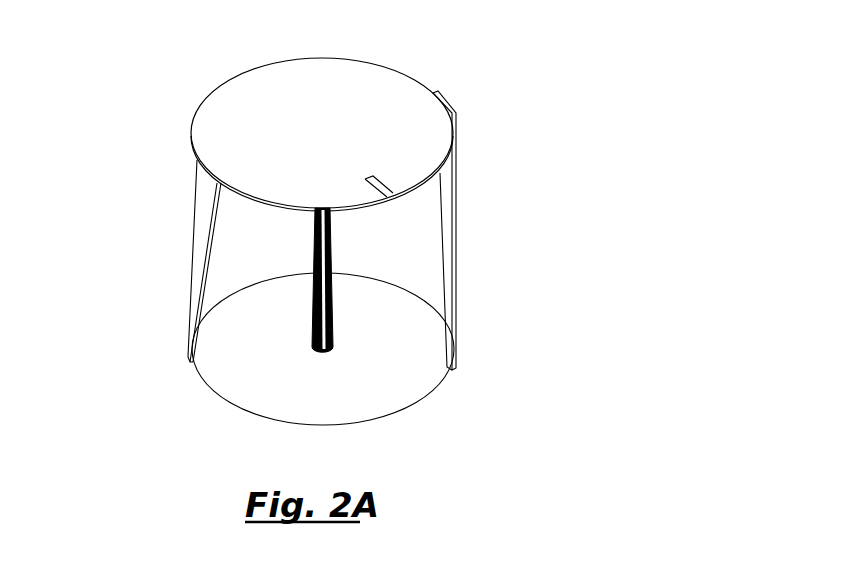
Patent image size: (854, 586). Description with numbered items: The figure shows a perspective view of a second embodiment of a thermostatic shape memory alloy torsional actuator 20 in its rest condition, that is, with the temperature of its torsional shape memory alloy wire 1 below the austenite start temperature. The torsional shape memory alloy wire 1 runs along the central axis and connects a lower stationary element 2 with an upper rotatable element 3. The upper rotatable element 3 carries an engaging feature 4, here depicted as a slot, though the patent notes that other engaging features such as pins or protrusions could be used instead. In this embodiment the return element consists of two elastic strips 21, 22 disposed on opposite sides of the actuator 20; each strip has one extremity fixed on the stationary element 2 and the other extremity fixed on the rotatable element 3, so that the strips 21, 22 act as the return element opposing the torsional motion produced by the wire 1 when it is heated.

The torsional shape memory alloy wire 1 is at (317, 321).
The lower stationary element 2 is at (368, 378).
The upper rotatable element 3 is at (228, 138).
The engaging feature 4 is at (379, 183).
The thermostatic shape memory alloy torsional actuator 20 is at (515, 182).
The elastic strip 21 is at (203, 218).
The elastic strip 22 is at (452, 282).